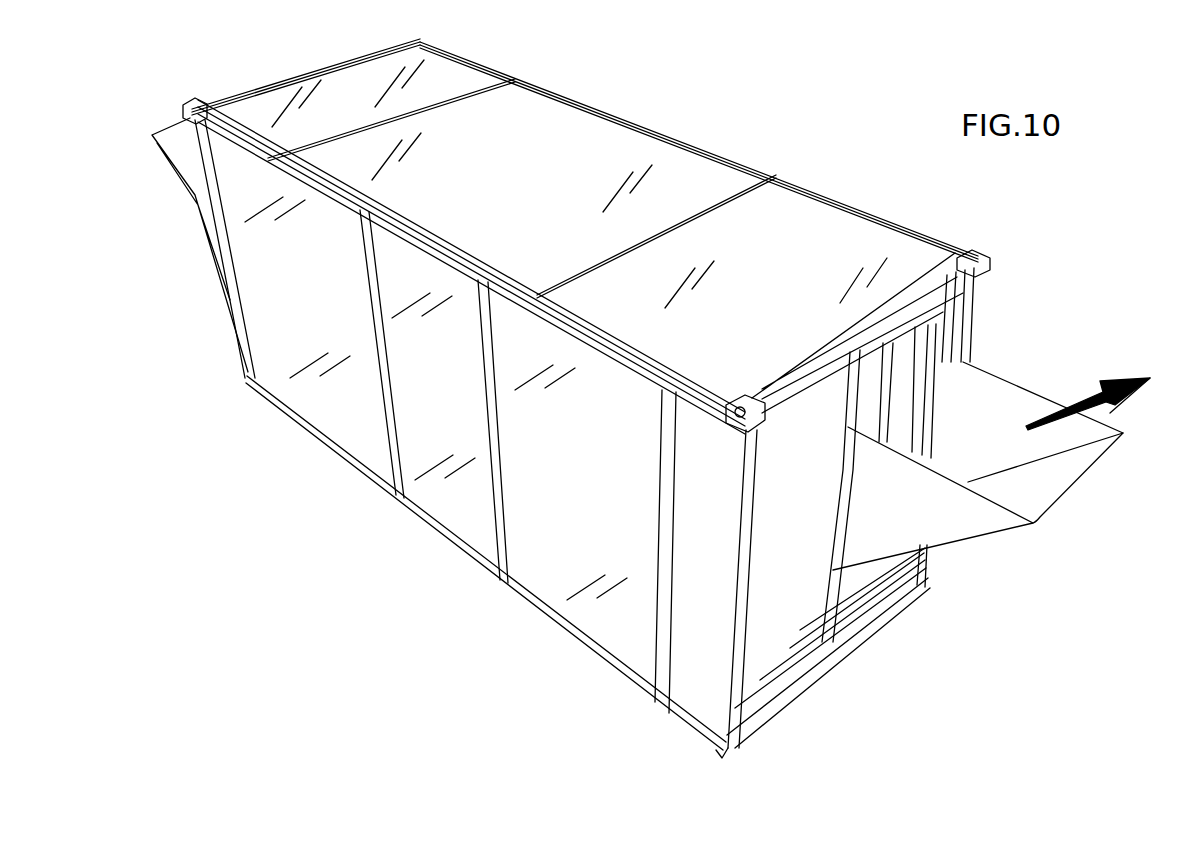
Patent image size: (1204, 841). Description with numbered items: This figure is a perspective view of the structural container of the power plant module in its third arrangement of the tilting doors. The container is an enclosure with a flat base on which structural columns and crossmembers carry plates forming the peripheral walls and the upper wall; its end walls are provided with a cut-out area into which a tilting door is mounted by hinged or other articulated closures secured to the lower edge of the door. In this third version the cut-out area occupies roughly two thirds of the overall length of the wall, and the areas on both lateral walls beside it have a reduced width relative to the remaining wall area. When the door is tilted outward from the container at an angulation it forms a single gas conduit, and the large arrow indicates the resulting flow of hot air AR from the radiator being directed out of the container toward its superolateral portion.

The hot air AR is at (1104, 397).